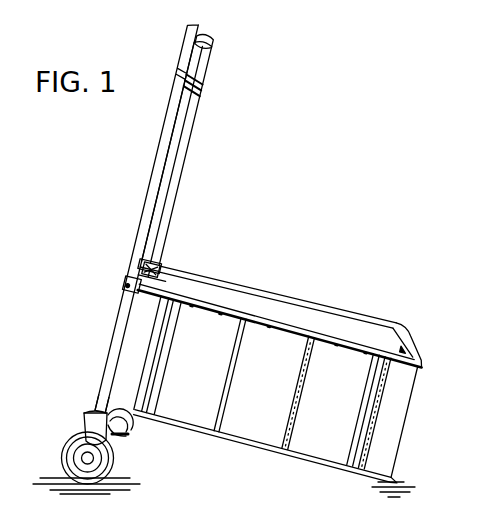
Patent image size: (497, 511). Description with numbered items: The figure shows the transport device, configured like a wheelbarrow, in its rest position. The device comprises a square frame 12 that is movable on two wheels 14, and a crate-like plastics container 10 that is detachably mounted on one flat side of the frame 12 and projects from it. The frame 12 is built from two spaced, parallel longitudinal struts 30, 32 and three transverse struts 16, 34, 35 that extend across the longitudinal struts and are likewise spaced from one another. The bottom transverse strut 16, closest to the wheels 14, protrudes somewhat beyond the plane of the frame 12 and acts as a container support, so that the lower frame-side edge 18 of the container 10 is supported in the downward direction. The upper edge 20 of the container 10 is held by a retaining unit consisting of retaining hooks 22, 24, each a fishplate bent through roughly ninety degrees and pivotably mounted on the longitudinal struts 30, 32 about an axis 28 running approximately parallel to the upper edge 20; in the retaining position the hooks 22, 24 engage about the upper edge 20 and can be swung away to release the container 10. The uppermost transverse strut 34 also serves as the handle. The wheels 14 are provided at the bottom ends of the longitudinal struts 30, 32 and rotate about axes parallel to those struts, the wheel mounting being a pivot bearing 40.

The container 10 is at (300, 298).
The square frame 12 is at (201, 147).
The wheels 14 is at (63, 458).
The bottom transverse strut 16 is at (117, 431).
The lower edge 18 is at (98, 410).
The upper edge 20 is at (150, 272).
The retaining hook 22 is at (166, 276).
The retaining hook 24 is at (169, 256).
The axis 28 is at (128, 292).
The longitudinal strut 30 is at (153, 172).
The longitudinal strut 32 is at (181, 168).
The uppermost transverse strut 34 is at (207, 42).
The transverse strut 35 is at (209, 86).
The pivot bearing 40 is at (93, 403).